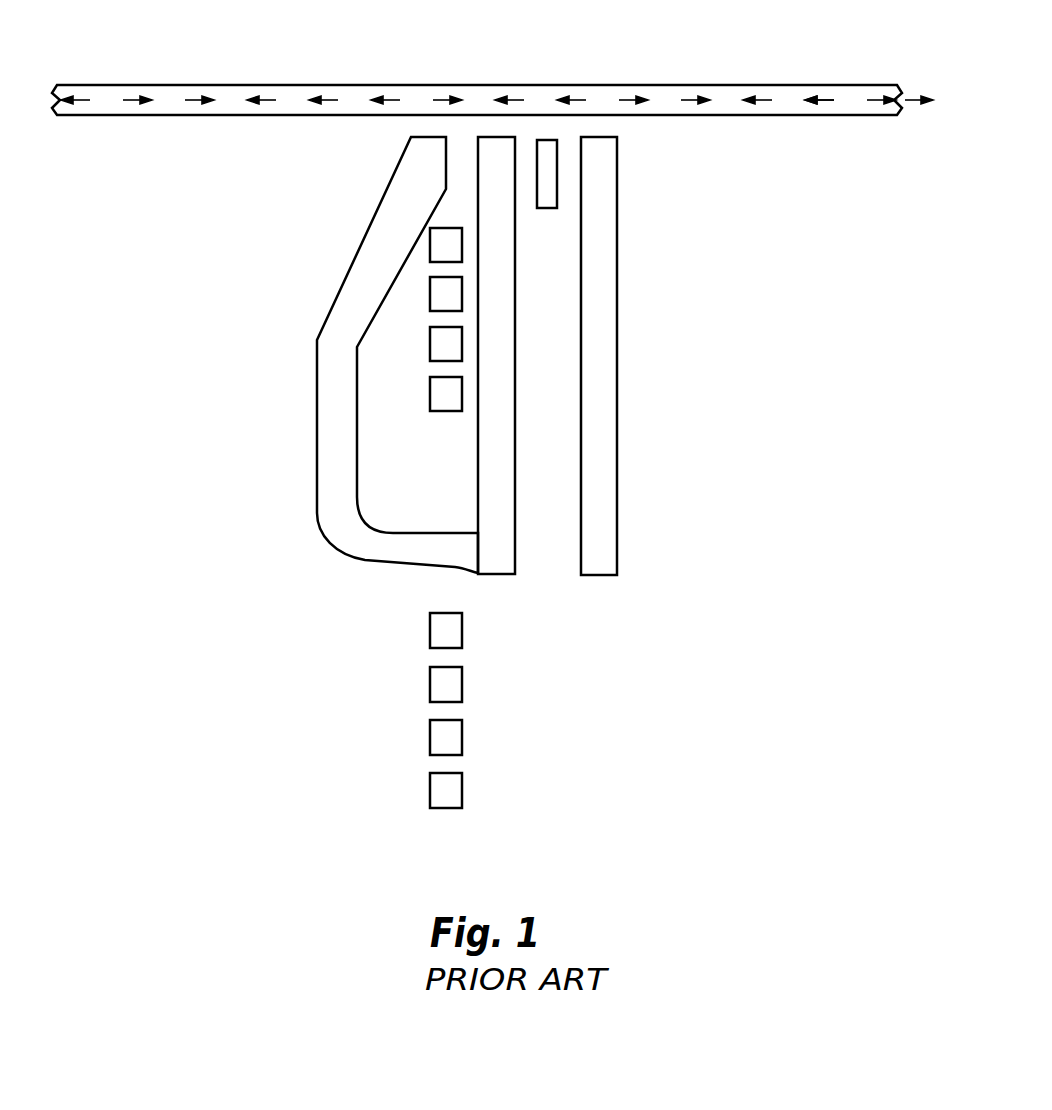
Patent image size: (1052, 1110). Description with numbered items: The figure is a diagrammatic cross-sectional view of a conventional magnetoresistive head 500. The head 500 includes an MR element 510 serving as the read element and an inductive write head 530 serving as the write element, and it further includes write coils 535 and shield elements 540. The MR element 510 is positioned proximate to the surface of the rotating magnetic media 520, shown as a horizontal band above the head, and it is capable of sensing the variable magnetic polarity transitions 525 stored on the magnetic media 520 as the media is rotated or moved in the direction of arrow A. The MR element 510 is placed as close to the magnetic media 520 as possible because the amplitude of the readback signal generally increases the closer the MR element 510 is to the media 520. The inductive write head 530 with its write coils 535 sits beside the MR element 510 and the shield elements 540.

The head 500 is at (495, 472).
The MR element 510 is at (548, 210).
The rotating magnetic media 520 is at (781, 83).
The variable magnetic polarity transitions 525 is at (833, 100).
The inductive write head 530 is at (355, 542).
The write coils 535 is at (438, 398).
The shield elements 540 is at (600, 386).